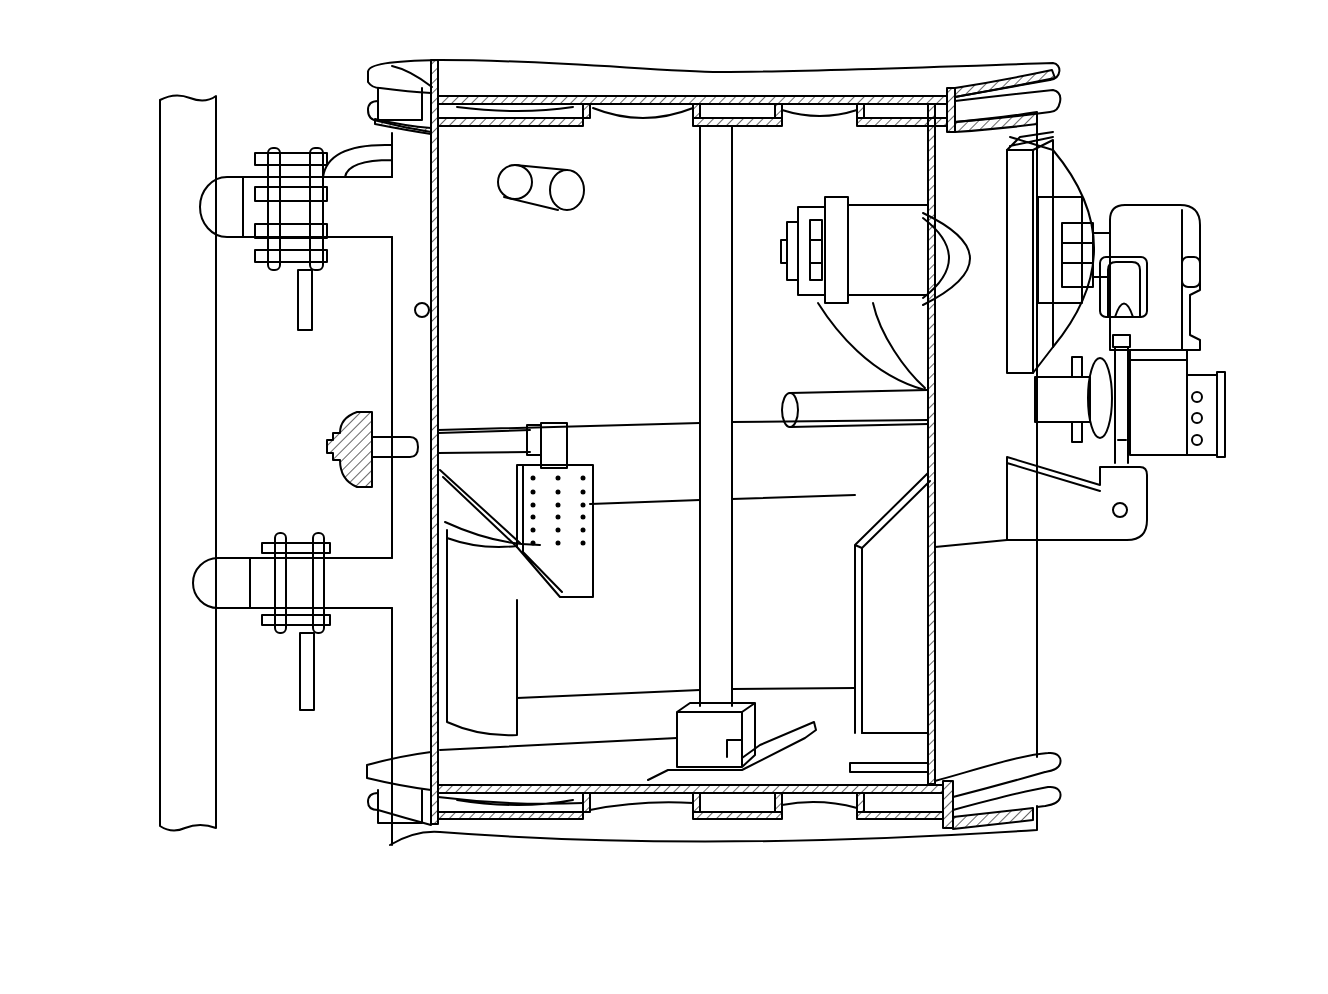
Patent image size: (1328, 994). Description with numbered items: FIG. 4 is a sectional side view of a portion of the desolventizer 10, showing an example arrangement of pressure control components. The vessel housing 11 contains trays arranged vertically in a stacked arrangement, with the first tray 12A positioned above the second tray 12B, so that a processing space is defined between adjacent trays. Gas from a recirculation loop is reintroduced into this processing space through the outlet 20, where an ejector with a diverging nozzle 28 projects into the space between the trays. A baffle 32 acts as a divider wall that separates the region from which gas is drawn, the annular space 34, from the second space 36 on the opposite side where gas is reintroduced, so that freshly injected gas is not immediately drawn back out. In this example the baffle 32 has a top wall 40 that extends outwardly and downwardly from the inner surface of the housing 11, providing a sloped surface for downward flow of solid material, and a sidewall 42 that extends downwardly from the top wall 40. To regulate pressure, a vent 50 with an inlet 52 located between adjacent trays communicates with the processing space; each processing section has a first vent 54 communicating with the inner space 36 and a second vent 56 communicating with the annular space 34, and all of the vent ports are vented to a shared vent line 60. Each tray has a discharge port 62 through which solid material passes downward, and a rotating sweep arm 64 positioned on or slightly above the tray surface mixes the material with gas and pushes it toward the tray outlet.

The desolventizer 10 is at (1258, 122).
The vessel housing 11 is at (1057, 148).
The first tray 12A is at (893, 100).
The second tray 12B is at (895, 803).
The outlet 20 is at (529, 219).
The diverging nozzle 28 is at (548, 205).
The baffle 32 is at (612, 552).
The space 34 is at (428, 690).
The second space 36 is at (812, 666).
The top wall 40 is at (460, 510).
The sidewall 42 is at (503, 652).
The vent 50 is at (148, 425).
The inlet 52 is at (392, 215).
The first vent 54 is at (305, 115).
The second vent 56 is at (325, 512).
The vent line 60 is at (160, 244).
The discharge port 62 is at (603, 795).
The rotating sweep arm 64 is at (668, 765).